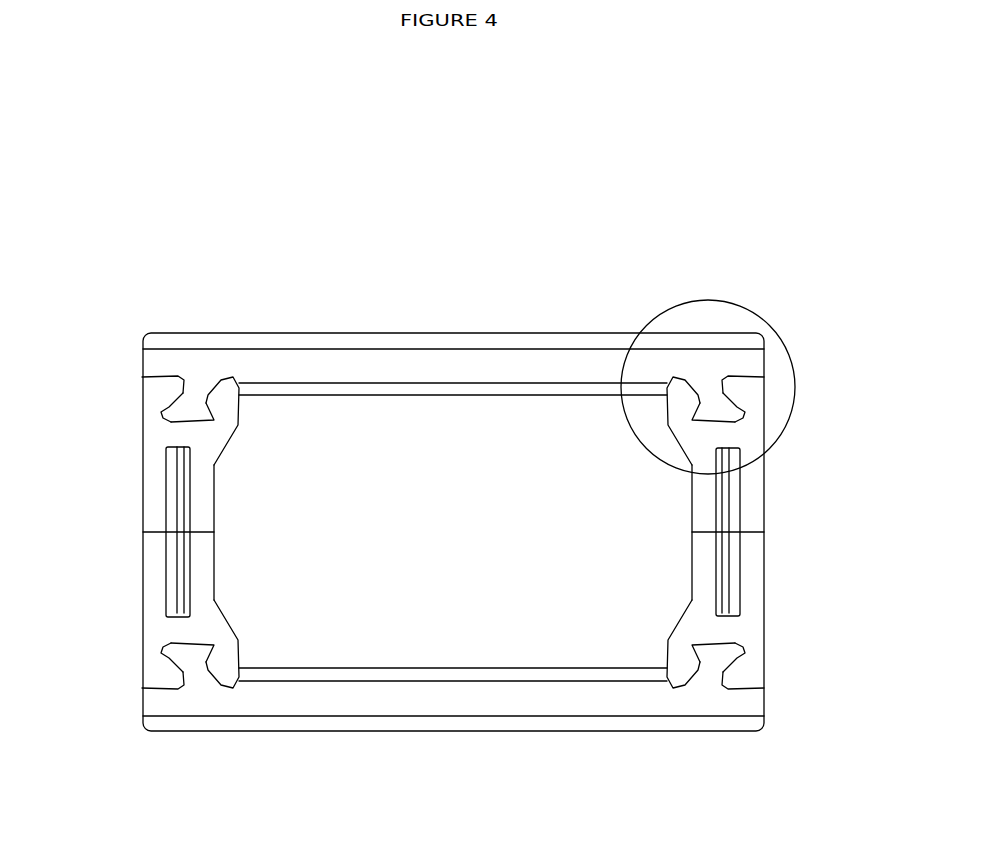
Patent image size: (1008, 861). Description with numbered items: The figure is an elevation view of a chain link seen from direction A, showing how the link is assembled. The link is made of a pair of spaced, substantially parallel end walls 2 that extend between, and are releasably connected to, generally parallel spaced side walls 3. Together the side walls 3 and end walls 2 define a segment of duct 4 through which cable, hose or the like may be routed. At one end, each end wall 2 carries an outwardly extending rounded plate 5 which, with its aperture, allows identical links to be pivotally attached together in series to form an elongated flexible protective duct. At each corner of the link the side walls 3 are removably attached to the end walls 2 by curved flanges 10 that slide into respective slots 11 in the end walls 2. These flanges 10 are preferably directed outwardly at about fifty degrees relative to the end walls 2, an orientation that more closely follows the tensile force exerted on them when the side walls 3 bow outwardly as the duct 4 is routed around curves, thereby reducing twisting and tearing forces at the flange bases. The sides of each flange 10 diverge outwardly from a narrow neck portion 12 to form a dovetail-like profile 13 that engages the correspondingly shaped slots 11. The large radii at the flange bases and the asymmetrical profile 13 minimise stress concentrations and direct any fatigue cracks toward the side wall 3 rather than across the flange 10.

The end wall 2 is at (143, 502).
The side wall 3 is at (467, 360).
The duct 4 is at (418, 565).
The rounded plate 5 is at (173, 560).
The curved flange 10 is at (160, 377).
The slot 11 is at (168, 426).
The neck portion 12 is at (193, 393).
The dovetail-like profile 13 is at (655, 452).
The direction A is at (790, 427).